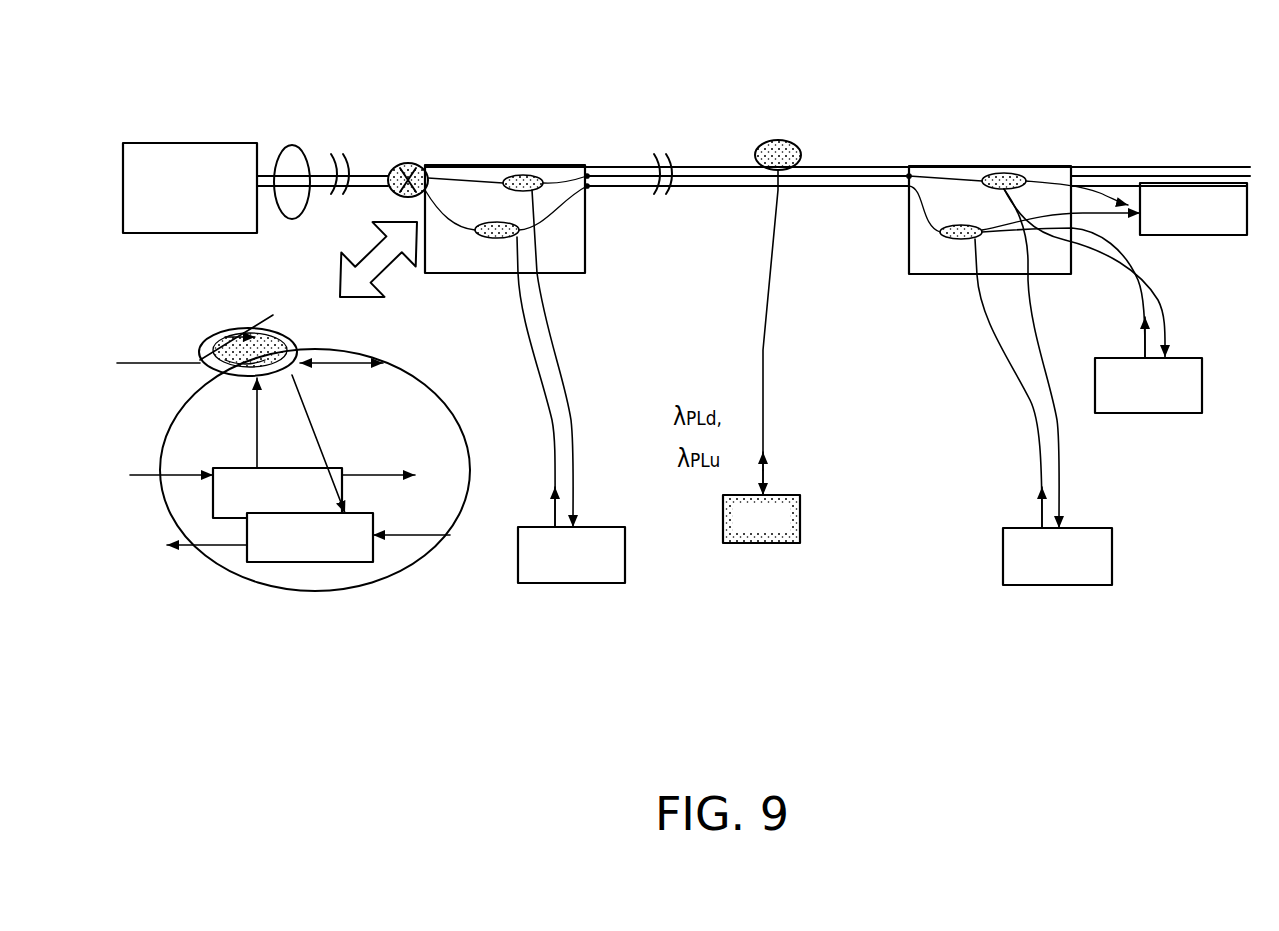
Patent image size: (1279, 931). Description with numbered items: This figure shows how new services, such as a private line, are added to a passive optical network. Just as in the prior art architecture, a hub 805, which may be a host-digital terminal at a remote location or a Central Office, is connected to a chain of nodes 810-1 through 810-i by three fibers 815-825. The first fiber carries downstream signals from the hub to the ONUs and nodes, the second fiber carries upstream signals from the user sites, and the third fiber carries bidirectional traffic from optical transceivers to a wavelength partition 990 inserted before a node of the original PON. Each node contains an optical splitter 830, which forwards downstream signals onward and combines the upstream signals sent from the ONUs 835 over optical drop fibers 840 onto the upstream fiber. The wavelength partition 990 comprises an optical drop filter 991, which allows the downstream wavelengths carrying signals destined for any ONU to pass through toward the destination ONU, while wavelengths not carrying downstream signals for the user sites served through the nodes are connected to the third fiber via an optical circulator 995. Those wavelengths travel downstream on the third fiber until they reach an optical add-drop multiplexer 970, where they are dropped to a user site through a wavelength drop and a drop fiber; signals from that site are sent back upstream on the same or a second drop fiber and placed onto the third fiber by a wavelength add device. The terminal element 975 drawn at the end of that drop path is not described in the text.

The hub 805 is at (198, 140).
The fibers 815-825 is at (292, 138).
The wavelength partition 990 is at (408, 158).
The node 810-1 is at (587, 235).
The node 810-i is at (909, 240).
The optical splitter 830 is at (488, 222).
The optical drop fibers 840 is at (543, 385).
The ONUs 835 is at (535, 585).
The optical add-drop multiplexer 970 is at (778, 130).
The control transmitter (CTx) 975 is at (767, 547).
The optical circulator 995 is at (107, 344).
The optical drop filter 991 is at (228, 521).